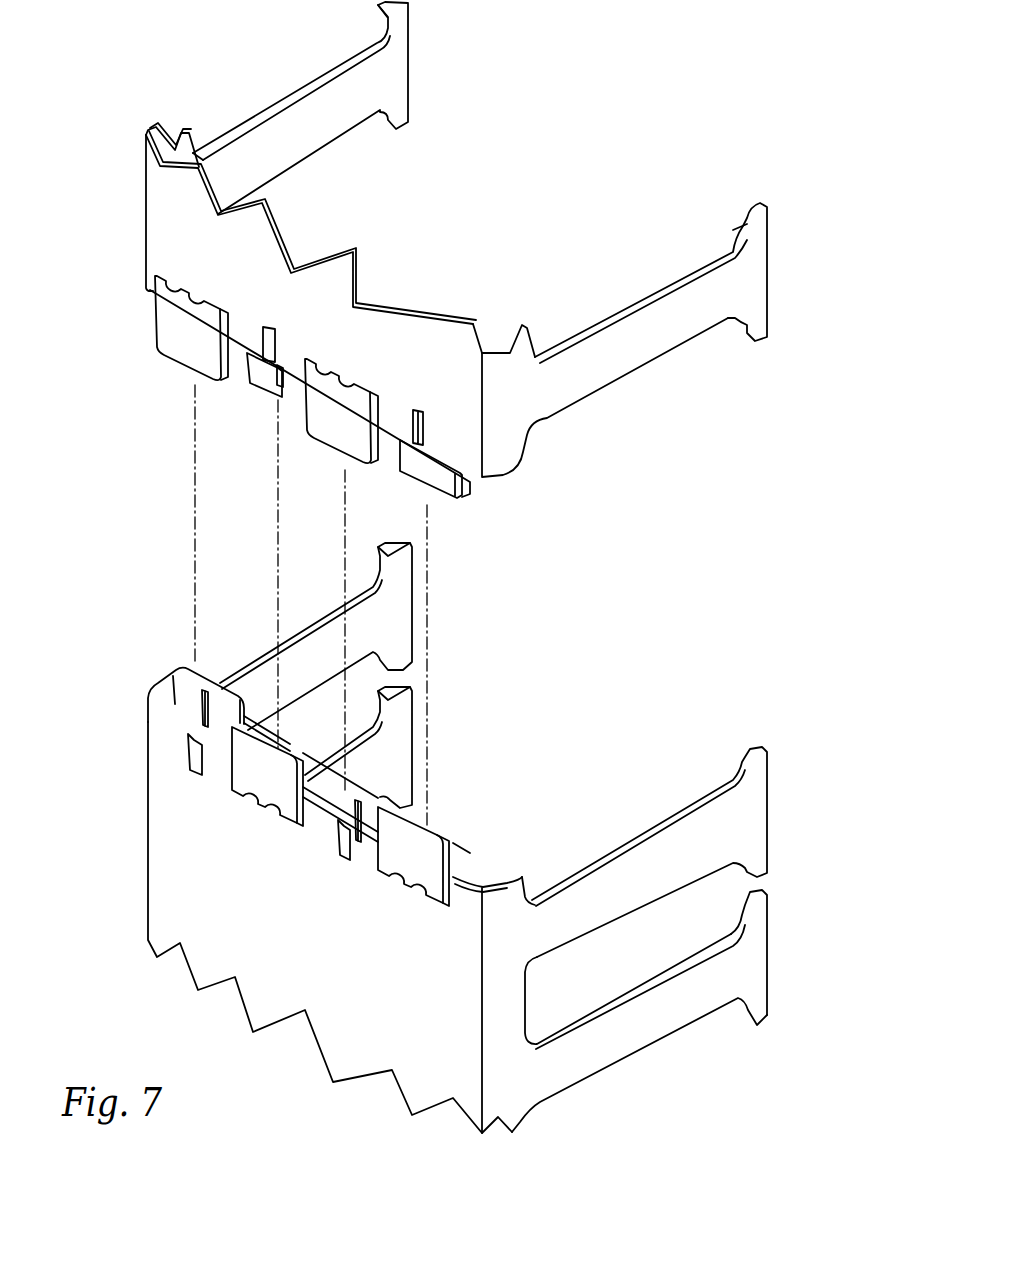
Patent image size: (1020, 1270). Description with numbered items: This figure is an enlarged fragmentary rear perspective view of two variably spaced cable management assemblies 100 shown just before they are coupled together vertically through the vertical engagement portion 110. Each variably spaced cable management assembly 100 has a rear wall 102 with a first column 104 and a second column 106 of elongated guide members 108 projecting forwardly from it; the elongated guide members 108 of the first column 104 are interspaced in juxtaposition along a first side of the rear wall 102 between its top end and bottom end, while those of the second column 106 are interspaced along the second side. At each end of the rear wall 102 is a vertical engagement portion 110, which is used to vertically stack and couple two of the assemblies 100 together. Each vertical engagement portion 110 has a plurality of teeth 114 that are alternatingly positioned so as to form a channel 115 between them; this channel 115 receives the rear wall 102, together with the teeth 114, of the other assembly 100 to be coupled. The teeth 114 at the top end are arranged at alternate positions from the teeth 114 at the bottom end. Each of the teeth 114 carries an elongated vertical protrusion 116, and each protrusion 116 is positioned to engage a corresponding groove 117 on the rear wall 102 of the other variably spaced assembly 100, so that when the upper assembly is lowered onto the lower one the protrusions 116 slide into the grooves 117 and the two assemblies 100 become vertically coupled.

The variably spaced cable management assembly 100 is at (431, 567).
The rear wall 102 is at (165, 212).
The first column 104 is at (664, 403).
The second column 106 is at (359, 169).
The elongated guide member 108 is at (645, 292).
The vertical engagement portion 110 is at (305, 561).
The teeth 114 is at (158, 332).
The channel 115 is at (119, 298).
The elongated vertical protrusion 116 is at (282, 375).
The groove 117 is at (268, 335).